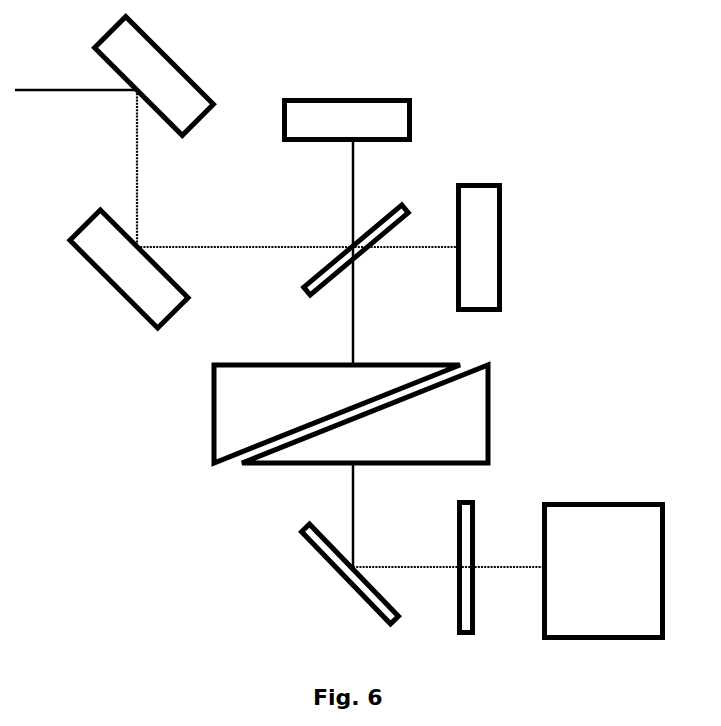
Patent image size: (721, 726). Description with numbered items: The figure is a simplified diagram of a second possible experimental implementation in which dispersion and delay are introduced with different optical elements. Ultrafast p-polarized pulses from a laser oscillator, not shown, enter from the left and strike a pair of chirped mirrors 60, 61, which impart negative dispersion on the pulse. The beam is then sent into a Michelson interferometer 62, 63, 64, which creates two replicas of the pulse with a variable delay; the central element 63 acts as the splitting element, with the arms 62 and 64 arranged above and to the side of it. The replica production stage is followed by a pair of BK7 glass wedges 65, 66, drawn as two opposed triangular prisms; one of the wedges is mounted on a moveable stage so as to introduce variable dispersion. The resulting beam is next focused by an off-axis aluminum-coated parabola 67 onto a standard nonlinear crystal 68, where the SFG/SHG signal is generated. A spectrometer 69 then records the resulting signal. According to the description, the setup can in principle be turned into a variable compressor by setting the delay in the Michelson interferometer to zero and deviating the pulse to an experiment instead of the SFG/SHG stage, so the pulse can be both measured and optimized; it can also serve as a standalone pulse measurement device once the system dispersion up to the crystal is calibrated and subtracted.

The chirped mirror 60 is at (154, 76).
The chirped mirror 61 is at (129, 273).
The Michelson interferometer element 62 is at (347, 107).
The Michelson interferometer element 63 is at (367, 239).
The Michelson interferometer element 64 is at (479, 234).
The BK7 glass wedge 65 is at (320, 414).
The BK7 glass wedge 66 is at (381, 414).
The off-axis aluminum-coated parabola 67 is at (337, 566).
The nonlinear crystal 68 is at (466, 583).
The spectrometer 69 is at (604, 557).